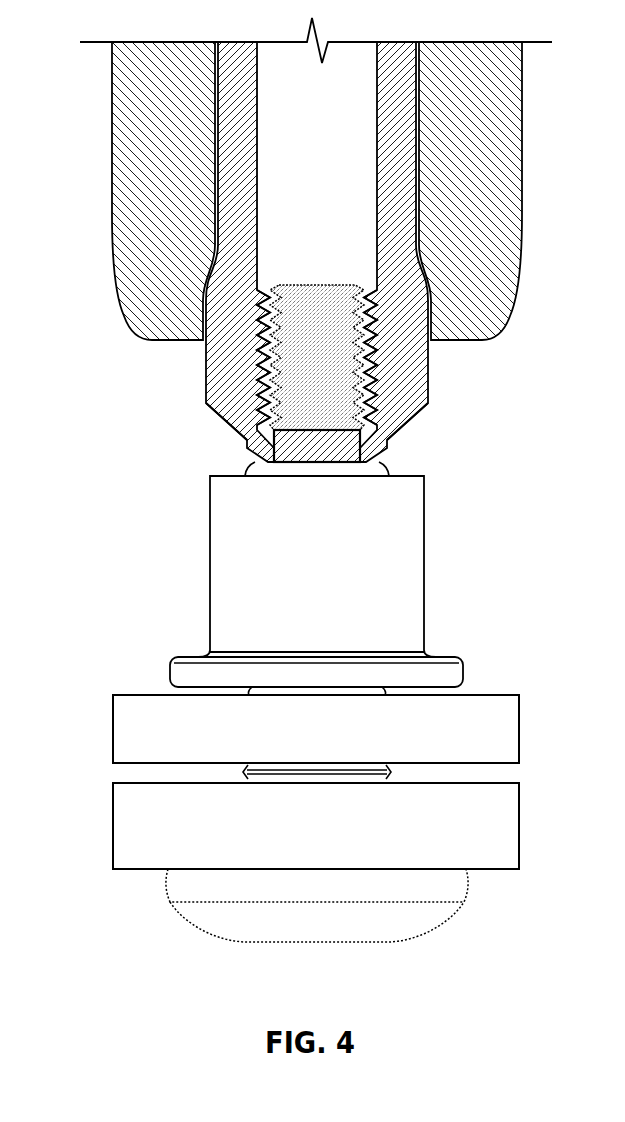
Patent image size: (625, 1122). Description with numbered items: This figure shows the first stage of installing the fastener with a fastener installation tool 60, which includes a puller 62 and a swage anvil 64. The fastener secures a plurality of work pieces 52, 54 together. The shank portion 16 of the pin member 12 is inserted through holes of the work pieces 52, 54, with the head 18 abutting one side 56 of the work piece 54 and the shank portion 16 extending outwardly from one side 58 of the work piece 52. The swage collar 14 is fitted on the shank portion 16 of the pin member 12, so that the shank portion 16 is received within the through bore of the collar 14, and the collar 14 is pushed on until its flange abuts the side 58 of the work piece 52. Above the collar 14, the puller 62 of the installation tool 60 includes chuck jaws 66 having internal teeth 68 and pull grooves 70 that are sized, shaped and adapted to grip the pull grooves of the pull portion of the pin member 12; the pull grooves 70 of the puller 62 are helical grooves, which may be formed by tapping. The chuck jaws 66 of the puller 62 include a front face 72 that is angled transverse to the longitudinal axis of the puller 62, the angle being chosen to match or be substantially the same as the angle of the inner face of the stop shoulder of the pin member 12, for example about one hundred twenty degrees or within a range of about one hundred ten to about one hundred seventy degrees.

The pin member 12 is at (236, 928).
The swage collar 14 is at (230, 587).
The shank portion 16 is at (250, 455).
The head 18 is at (193, 907).
The work piece 52 is at (123, 737).
The work piece 54 is at (130, 840).
The side of the work piece 56 is at (485, 870).
The side of the work piece 58 is at (502, 695).
The fastener installation tool 60 is at (438, 352).
The puller 62 is at (242, 145).
The swage anvil 64 is at (145, 222).
The chuck jaws 66 is at (228, 350).
The internal teeth 68 is at (237, 373).
The pull grooves 70 is at (268, 395).
The front face 72 is at (233, 427).